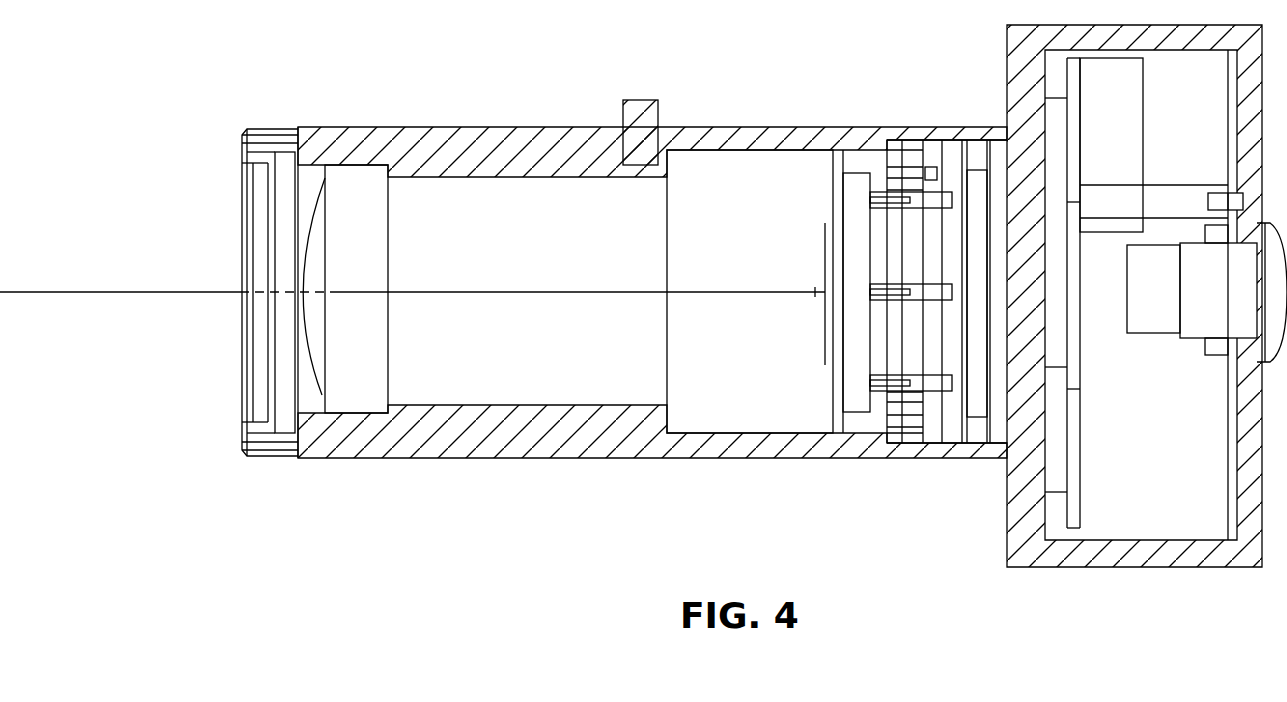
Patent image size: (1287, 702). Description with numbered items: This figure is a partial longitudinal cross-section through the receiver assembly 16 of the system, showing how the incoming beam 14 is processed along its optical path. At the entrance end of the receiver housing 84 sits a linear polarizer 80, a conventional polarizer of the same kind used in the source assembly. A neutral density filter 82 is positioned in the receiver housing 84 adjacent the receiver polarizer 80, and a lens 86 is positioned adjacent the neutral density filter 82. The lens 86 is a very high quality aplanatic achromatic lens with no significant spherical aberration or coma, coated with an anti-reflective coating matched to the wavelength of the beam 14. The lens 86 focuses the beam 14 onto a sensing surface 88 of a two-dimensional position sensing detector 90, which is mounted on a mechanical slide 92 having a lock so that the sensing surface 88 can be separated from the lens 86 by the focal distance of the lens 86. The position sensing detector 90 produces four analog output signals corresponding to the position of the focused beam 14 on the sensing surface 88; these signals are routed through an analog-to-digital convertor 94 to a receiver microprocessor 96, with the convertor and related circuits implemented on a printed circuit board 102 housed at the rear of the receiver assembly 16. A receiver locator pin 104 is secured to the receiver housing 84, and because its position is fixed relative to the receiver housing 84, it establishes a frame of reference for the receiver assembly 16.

The beam 14 is at (483, 292).
The receiver assembly 16 is at (758, 127).
The linear polarizer 80 is at (262, 193).
The neutral density filter 82 is at (285, 387).
The receiver housing 84 is at (418, 442).
The lens 86 is at (315, 235).
The sensing surface 88 is at (825, 240).
The two-dimensional position sensing detector 90 is at (847, 367).
The mechanical slide 92 is at (940, 230).
The analog-to-digital convertor 94 is at (1073, 500).
The receiver microprocessor 96 is at (1073, 455).
The printed circuit board 102 is at (1073, 410).
The receiver locator pin 104 is at (642, 112).